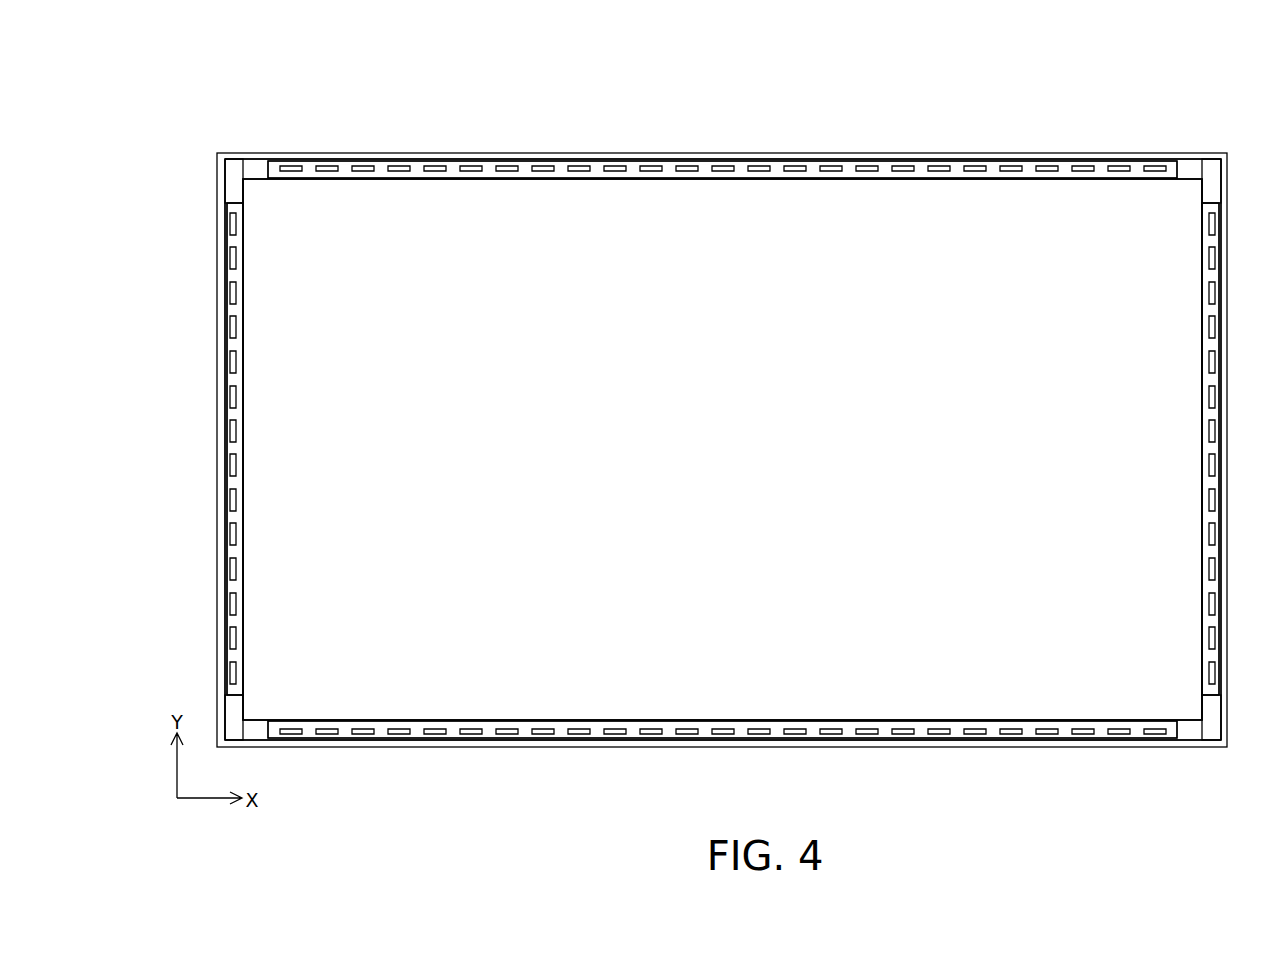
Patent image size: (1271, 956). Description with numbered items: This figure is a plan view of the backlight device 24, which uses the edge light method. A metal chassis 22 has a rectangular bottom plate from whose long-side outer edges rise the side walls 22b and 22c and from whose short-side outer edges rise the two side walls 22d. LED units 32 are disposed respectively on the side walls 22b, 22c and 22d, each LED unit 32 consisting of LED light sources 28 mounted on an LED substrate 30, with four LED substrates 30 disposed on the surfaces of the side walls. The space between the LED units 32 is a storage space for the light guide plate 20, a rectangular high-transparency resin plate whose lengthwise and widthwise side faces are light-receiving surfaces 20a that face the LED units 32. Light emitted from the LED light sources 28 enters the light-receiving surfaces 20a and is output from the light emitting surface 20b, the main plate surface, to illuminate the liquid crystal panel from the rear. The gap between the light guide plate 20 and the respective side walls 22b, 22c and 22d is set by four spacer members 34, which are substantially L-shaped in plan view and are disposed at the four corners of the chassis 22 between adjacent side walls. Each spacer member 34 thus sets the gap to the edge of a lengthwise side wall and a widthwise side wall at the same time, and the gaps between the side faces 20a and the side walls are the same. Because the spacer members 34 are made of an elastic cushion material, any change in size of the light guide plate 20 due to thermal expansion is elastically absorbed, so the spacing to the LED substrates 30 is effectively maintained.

The light guide plate 20 is at (857, 202).
The light-receiving surface 20a is at (705, 178).
The light emitting surface 20b is at (722, 449).
The chassis 22 is at (1232, 275).
The side wall 22b is at (826, 745).
The side wall 22c is at (1040, 160).
The side wall 22d is at (222, 370).
The backlight device 24 is at (573, 127).
The LED light source 28 is at (325, 167).
The LED substrate 30 is at (377, 163).
The LED unit 32 is at (392, 100).
The spacer member 34 is at (240, 176).